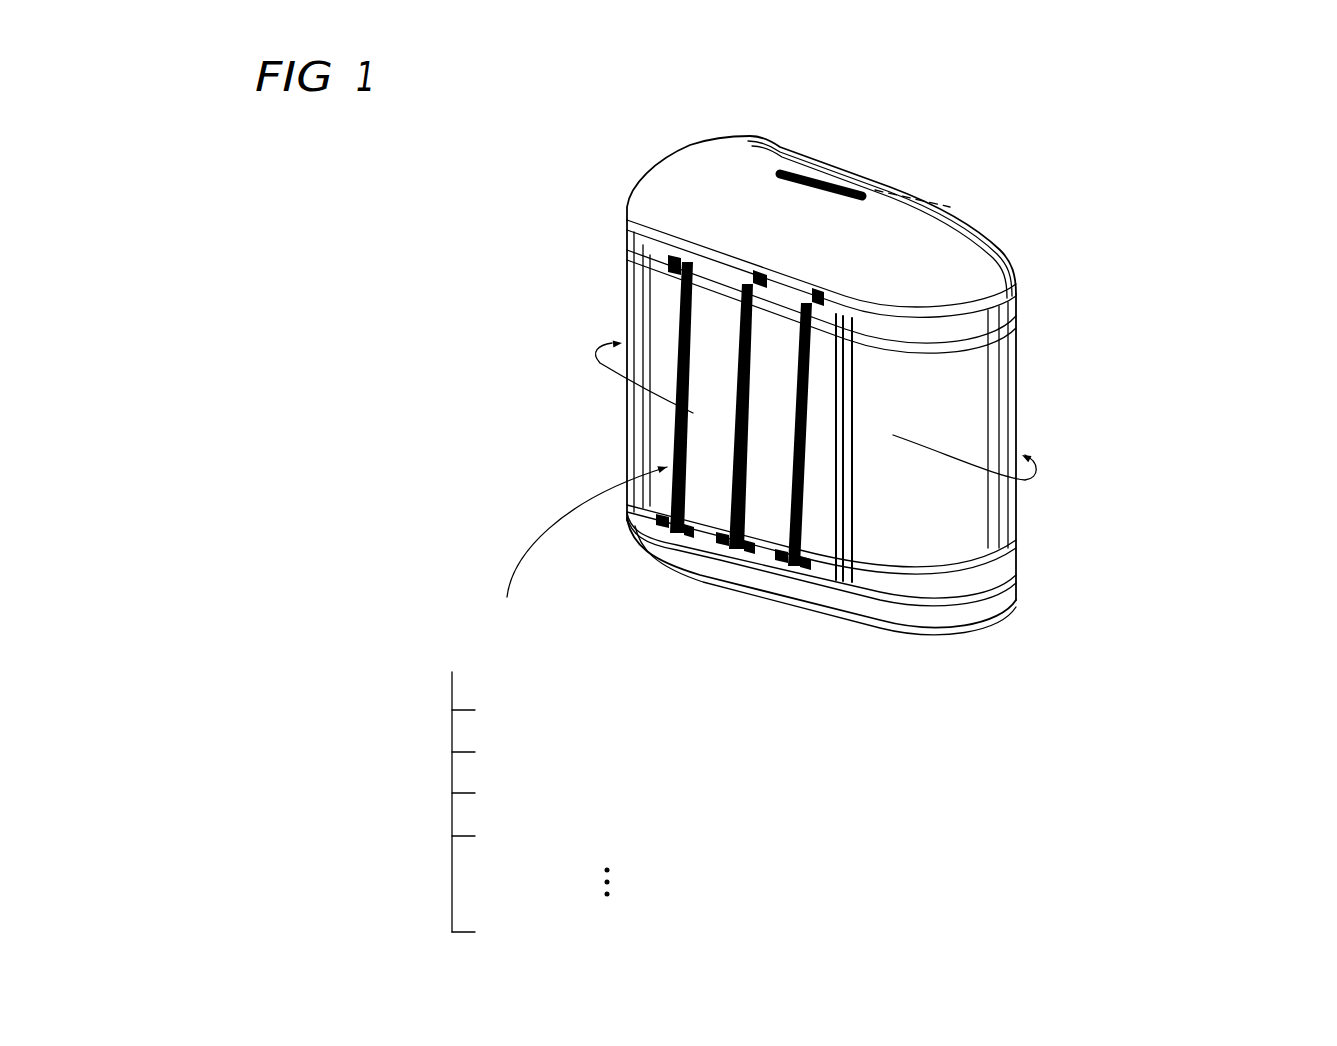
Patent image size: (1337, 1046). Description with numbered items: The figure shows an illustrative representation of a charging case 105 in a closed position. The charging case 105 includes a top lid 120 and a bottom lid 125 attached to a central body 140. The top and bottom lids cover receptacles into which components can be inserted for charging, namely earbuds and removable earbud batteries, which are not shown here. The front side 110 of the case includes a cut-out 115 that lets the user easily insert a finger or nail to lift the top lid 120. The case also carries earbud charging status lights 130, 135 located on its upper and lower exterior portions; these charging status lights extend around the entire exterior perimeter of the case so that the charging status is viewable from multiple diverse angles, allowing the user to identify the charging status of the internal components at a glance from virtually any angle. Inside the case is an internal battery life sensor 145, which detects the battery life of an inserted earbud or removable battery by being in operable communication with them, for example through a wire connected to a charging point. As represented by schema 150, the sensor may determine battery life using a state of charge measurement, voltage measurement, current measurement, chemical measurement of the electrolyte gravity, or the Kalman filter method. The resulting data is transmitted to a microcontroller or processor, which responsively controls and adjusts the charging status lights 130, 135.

The charging case 105 is at (1062, 84).
The front side 110 is at (787, 479).
The cut-out 115 is at (762, 270).
The top lid 120 is at (851, 170).
The bottom lid 125 is at (713, 576).
The earbud charging status light 130 is at (940, 336).
The charging status light 135 is at (940, 573).
The central body 140 is at (627, 455).
The internal battery life sensor 145 is at (489, 563).
The schema 150 is at (401, 794).